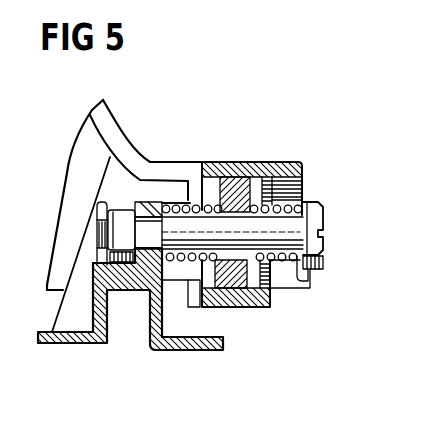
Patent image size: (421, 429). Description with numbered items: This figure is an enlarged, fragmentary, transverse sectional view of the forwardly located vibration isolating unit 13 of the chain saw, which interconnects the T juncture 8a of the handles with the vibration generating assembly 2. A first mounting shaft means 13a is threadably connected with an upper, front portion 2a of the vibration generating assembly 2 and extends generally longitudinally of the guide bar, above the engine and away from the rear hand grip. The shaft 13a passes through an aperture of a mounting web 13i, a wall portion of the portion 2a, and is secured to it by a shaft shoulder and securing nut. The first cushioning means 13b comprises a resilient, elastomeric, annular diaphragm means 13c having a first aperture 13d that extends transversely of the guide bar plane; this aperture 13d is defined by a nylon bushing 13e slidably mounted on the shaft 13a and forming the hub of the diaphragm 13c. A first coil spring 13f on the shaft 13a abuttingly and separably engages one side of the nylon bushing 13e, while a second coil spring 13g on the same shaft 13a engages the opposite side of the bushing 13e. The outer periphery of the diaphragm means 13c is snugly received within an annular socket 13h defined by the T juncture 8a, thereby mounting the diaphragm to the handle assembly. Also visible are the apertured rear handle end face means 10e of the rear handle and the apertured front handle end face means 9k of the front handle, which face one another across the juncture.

The vibration generating assembly 2 is at (70, 338).
The upper, front portion of the vibration generating assembly 2a is at (102, 200).
The T juncture 8a is at (248, 180).
The front handle end face means 9k is at (222, 305).
The rear handle end face means 10e is at (250, 125).
The front vibration isolating unit 13 is at (312, 153).
The first mounting shaft means 13a is at (324, 222).
The first cushioning means 13b is at (272, 292).
The annular diaphragm means 13c is at (278, 160).
The first aperture 13d is at (281, 206).
The nylon bushing 13e is at (192, 278).
The coil spring 13f is at (323, 263).
The coil spring 13g is at (174, 207).
The annular socket 13h is at (254, 307).
The mounting web 13i is at (151, 204).